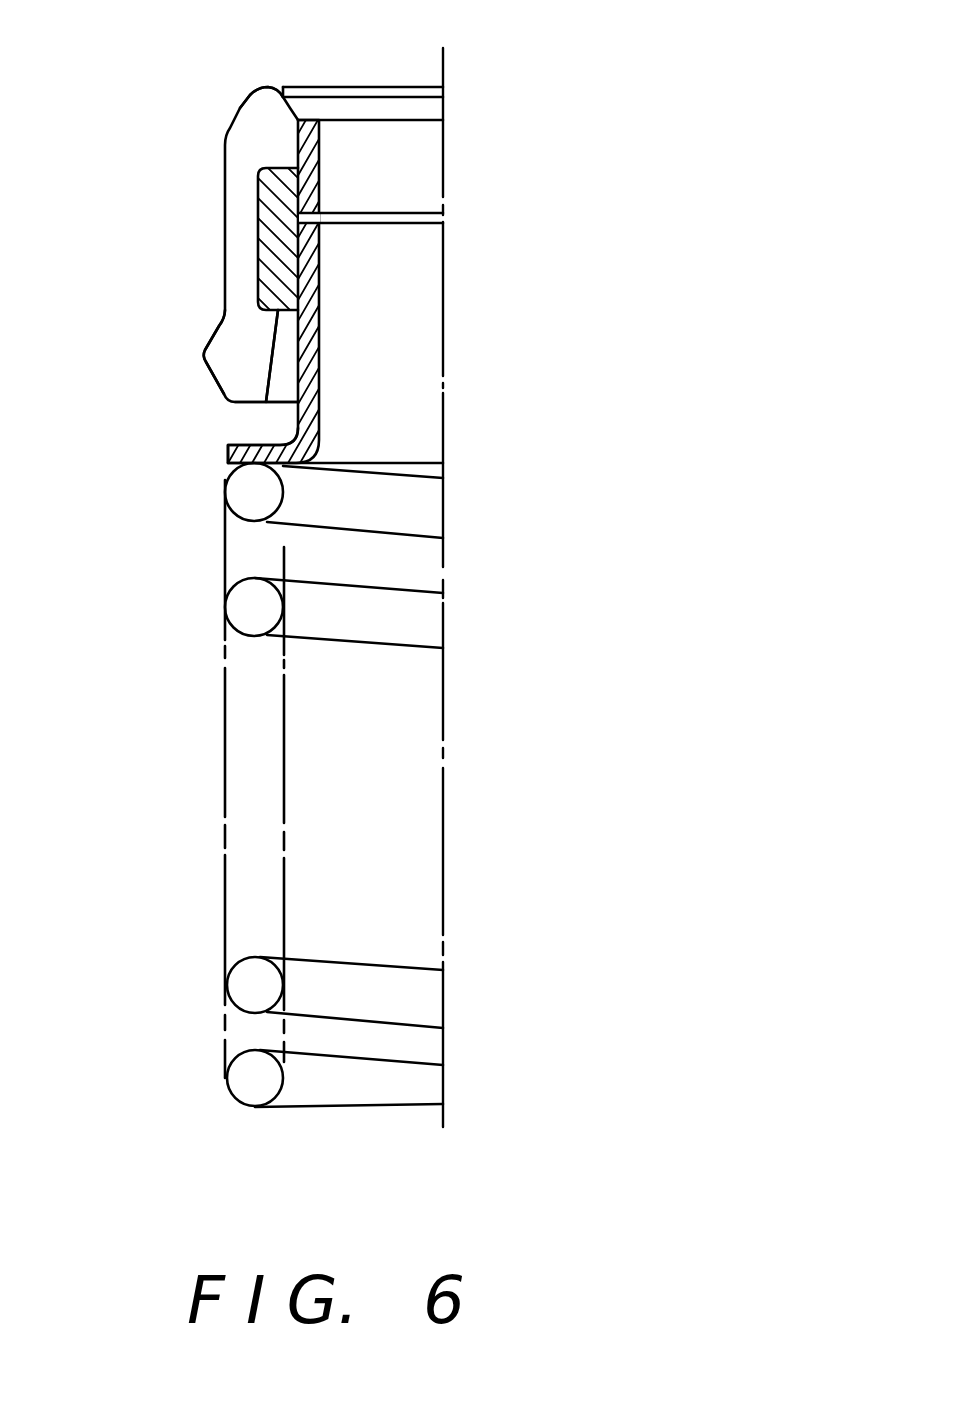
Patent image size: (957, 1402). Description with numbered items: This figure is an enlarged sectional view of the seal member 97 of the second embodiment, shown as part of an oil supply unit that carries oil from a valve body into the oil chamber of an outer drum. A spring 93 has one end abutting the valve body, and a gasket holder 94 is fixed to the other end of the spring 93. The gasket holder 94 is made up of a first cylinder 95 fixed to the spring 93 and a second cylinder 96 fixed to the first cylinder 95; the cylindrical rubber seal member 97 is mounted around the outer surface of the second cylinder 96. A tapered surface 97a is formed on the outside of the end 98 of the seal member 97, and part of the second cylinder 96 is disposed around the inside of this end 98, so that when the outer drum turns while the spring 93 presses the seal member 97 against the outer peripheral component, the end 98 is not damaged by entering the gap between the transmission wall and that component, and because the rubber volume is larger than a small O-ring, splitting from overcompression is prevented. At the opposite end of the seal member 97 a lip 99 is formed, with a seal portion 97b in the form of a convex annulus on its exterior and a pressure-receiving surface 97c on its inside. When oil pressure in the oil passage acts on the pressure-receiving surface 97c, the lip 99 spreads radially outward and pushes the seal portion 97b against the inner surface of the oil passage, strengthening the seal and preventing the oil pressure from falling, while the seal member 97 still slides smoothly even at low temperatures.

The spring 93 is at (253, 612).
The gasket holder 94 is at (340, 253).
The first cylinder 95 is at (320, 438).
The second cylinder 96 is at (320, 170).
The seal member 97 is at (222, 241).
The tapered surface 97a is at (232, 130).
The seal portion 97b is at (205, 355).
The pressure-receiving surface 97c is at (268, 377).
The end 98 is at (270, 90).
The lip 99 is at (236, 364).